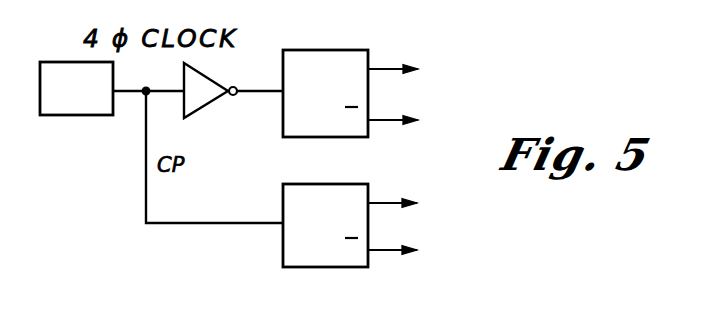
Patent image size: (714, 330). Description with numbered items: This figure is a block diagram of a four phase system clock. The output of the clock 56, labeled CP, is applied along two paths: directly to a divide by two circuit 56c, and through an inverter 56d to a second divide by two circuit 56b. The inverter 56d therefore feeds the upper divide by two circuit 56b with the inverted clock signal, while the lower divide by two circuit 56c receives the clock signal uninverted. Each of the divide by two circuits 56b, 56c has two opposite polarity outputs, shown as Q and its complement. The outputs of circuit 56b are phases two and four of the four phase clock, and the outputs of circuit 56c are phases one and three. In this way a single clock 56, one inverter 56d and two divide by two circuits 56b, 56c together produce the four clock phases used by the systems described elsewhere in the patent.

The clock 56 is at (63, 115).
The second divide by 2 circuit 56b is at (318, 50).
The divide by 2 circuit 56c is at (305, 267).
The inverter 56d is at (199, 108).